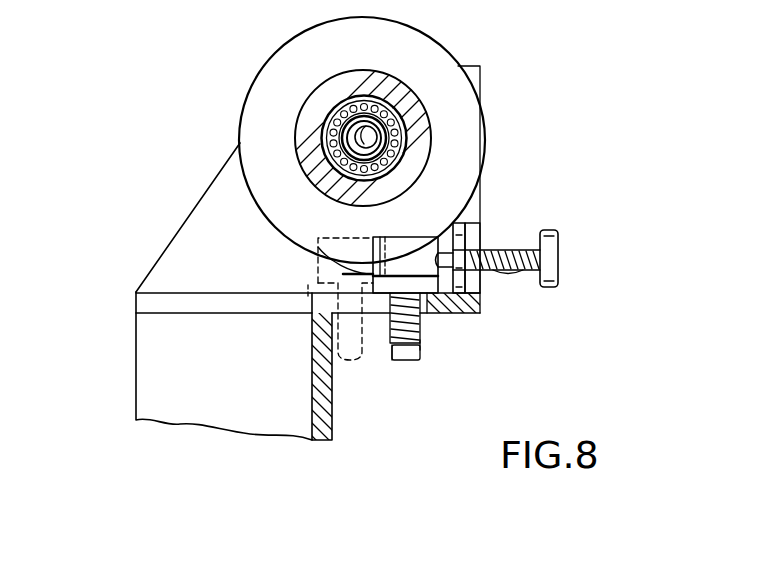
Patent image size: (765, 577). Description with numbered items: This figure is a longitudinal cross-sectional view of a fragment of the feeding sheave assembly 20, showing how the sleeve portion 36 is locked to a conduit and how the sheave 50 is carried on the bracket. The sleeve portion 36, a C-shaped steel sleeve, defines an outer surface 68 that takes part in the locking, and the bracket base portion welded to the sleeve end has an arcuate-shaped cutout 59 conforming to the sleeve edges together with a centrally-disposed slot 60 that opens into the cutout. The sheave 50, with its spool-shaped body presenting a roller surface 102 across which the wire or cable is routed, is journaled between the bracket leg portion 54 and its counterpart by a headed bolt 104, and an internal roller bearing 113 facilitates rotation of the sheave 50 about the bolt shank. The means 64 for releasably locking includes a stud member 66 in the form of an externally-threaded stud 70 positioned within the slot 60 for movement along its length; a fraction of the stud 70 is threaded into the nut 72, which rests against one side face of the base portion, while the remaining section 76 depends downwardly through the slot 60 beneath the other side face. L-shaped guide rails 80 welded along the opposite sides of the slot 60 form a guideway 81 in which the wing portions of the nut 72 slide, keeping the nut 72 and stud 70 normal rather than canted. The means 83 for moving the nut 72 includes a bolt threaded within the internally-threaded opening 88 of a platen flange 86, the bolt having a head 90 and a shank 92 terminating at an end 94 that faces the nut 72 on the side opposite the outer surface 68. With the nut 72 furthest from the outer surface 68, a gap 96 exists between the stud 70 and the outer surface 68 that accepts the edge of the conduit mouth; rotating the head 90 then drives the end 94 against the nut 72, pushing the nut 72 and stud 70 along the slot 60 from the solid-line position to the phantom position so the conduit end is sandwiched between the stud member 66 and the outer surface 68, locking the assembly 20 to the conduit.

The feeding sheave assembly 20 is at (547, 90).
The sleeve portion 36 is at (136, 369).
The sheave 50 is at (459, 64).
The leg portion 54 is at (207, 214).
The arcuate-shaped cutout 59 is at (158, 300).
The slot 60 is at (320, 287).
The means for releasably locking 64 is at (600, 283).
The stud member 66 is at (357, 362).
The outer surface 68 is at (332, 432).
The externally-threaded stud 70 is at (420, 333).
The nut 72 is at (413, 237).
The remaining section 76 is at (422, 347).
The guide rails 80 is at (318, 239).
The guideway 81 is at (285, 320).
The means for moving 83 is at (600, 233).
The platen flange 86 is at (466, 224).
The internally-threaded opening 88 is at (535, 266).
The head 90 is at (548, 287).
The shank 92 is at (466, 290).
The end 94 is at (449, 293).
The gap 96 is at (392, 346).
The roller surface 102 is at (325, 83).
The headed bolt 104 is at (386, 138).
The internal roller bearing 113 is at (322, 134).